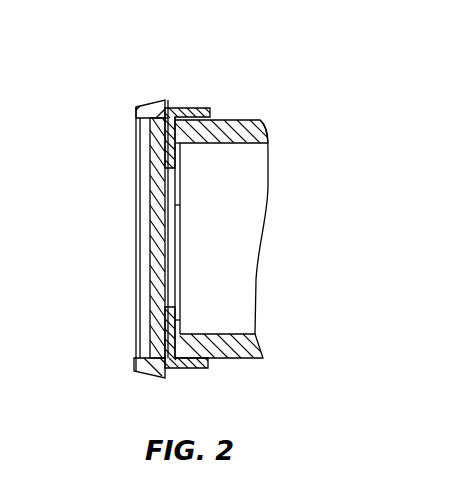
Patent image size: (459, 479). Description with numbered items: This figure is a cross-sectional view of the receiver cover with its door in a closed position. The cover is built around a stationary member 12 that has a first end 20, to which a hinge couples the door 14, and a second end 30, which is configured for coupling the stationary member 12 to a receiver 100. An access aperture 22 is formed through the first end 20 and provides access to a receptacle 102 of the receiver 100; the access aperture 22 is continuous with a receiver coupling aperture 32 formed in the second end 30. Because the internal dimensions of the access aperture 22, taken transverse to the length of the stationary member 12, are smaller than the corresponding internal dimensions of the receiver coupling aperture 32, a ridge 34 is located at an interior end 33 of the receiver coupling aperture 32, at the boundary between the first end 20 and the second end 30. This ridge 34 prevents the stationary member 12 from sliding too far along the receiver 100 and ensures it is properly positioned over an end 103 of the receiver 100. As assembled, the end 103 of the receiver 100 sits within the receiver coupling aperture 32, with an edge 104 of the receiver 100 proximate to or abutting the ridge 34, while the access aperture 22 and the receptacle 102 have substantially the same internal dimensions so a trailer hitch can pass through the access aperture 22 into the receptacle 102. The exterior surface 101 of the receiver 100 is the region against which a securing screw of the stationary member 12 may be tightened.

The stationary member 12 is at (142, 188).
The door 14 is at (142, 106).
The first end 20 is at (172, 97).
The access aperture 22 is at (162, 166).
The second end 30 is at (191, 97).
The receiver coupling aperture 32 is at (232, 118).
The interior end 33 is at (163, 130).
The ridge 34 is at (183, 140).
The receiver 100 is at (186, 241).
The exterior surface 101 is at (232, 350).
The receptacle 102 is at (239, 247).
The end 103 is at (188, 214).
The edge 104 is at (168, 327).